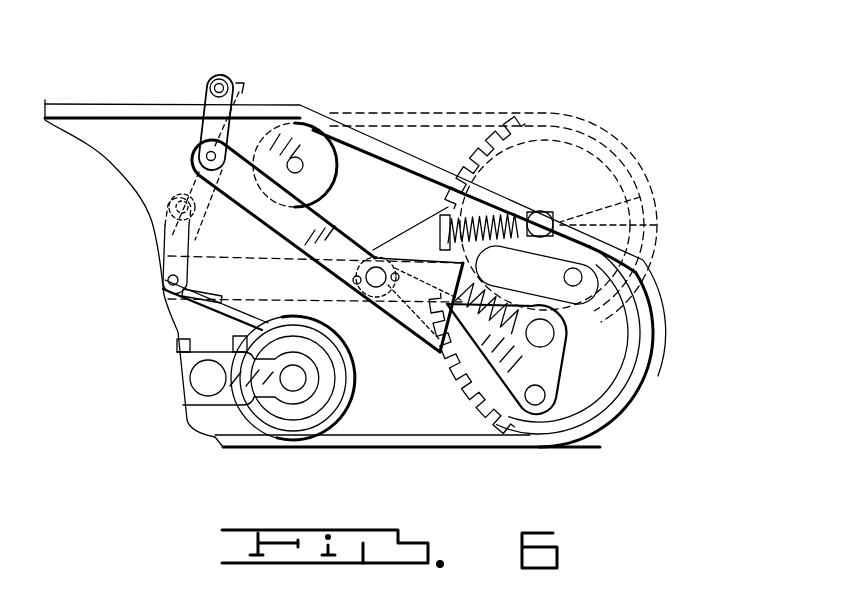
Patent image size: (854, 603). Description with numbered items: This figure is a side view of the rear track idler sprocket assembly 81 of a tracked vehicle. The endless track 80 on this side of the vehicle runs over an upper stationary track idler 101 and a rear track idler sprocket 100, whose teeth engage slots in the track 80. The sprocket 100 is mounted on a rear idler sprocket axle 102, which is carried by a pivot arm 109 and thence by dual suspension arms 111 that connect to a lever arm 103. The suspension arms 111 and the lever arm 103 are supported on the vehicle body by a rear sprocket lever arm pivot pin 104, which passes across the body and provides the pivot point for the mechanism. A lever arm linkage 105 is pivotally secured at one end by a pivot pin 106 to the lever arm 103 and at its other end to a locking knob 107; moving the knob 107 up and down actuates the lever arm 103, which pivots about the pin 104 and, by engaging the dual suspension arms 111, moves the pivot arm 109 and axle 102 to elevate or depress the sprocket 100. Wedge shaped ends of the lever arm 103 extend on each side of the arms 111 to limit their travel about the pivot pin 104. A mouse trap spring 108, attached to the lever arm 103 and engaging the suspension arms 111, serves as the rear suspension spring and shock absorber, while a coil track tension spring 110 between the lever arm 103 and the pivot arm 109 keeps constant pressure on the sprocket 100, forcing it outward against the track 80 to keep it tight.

The track 80 is at (377, 450).
The drive assembly 81 is at (618, 92).
The rear track idler sprocket 100 is at (617, 225).
The upper stationary track idler 101 is at (325, 182).
The rear idler sprocket axle 102 is at (640, 197).
The lever arm 103 is at (270, 226).
The rear sprocket lever arm pivot pin 104 is at (380, 288).
The lever arm linkage 105 is at (205, 100).
The pivot pin 106 is at (206, 157).
The locking knob 107 is at (218, 80).
The mouse trap spring 108 is at (440, 352).
The pivot arm 109 is at (580, 352).
The track tension spring 110 is at (500, 282).
The dual suspension arms 111 is at (477, 410).